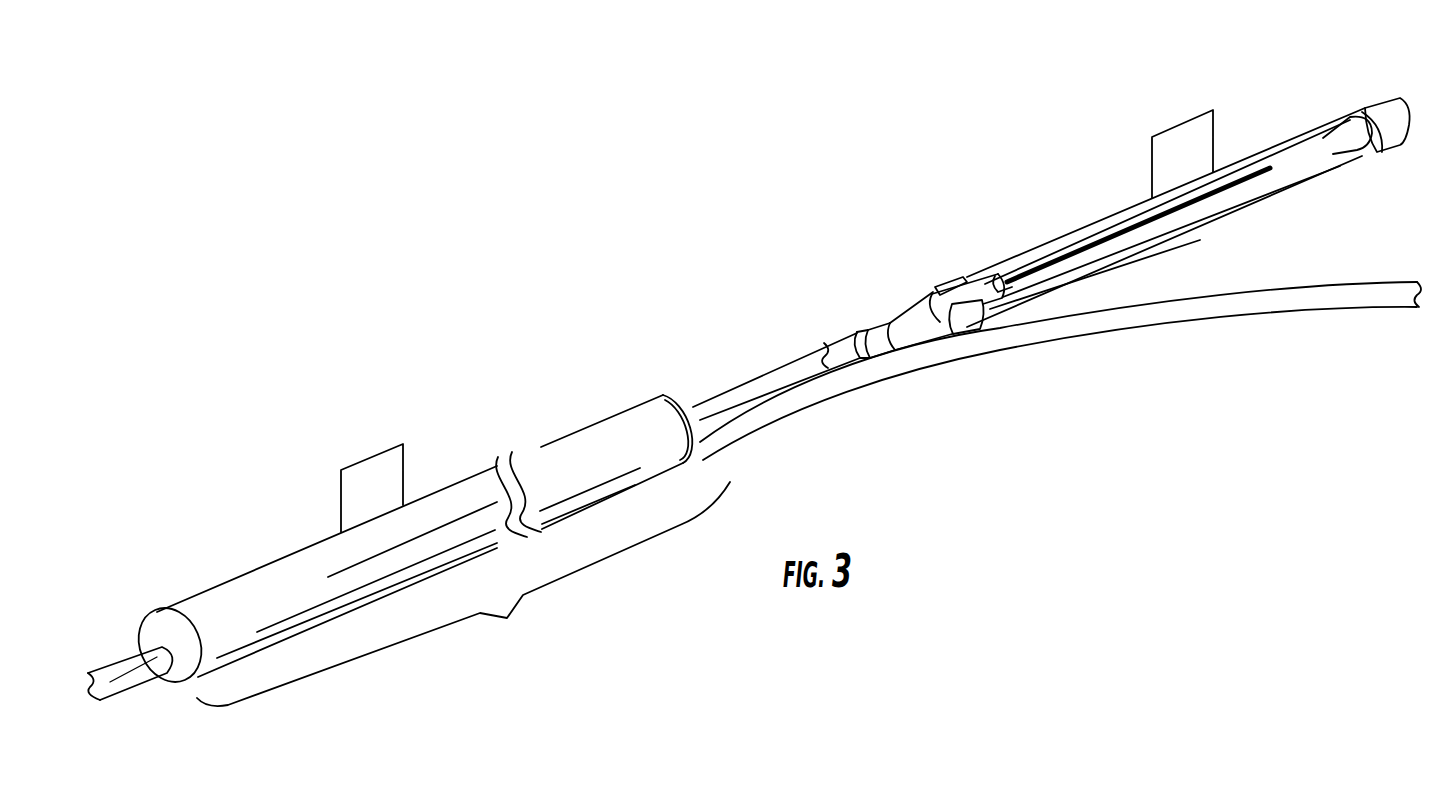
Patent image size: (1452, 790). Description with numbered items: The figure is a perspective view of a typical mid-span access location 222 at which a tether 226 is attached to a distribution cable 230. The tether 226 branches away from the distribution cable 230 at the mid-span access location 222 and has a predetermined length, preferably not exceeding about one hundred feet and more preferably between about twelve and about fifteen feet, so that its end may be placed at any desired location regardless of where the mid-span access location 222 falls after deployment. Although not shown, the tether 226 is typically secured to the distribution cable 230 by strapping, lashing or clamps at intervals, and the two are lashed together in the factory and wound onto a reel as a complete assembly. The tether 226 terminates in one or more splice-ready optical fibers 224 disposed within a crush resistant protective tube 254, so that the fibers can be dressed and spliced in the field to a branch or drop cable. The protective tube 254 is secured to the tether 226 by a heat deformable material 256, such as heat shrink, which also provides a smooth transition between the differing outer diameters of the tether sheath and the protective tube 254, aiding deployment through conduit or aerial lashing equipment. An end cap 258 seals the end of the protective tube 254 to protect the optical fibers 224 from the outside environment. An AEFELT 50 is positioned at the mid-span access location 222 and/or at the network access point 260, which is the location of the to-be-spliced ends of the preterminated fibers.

The AEFELT 50 is at (777, 321).
The mid-span access location 222 is at (429, 550).
The optical fibers 224 is at (1137, 222).
The tether 226 is at (843, 347).
The distribution cable 230 is at (117, 673).
The protective tube 254 is at (1313, 163).
The heat deformable material 256 is at (908, 323).
The end cap 258 is at (1382, 107).
The network access point 260 is at (1263, 150).